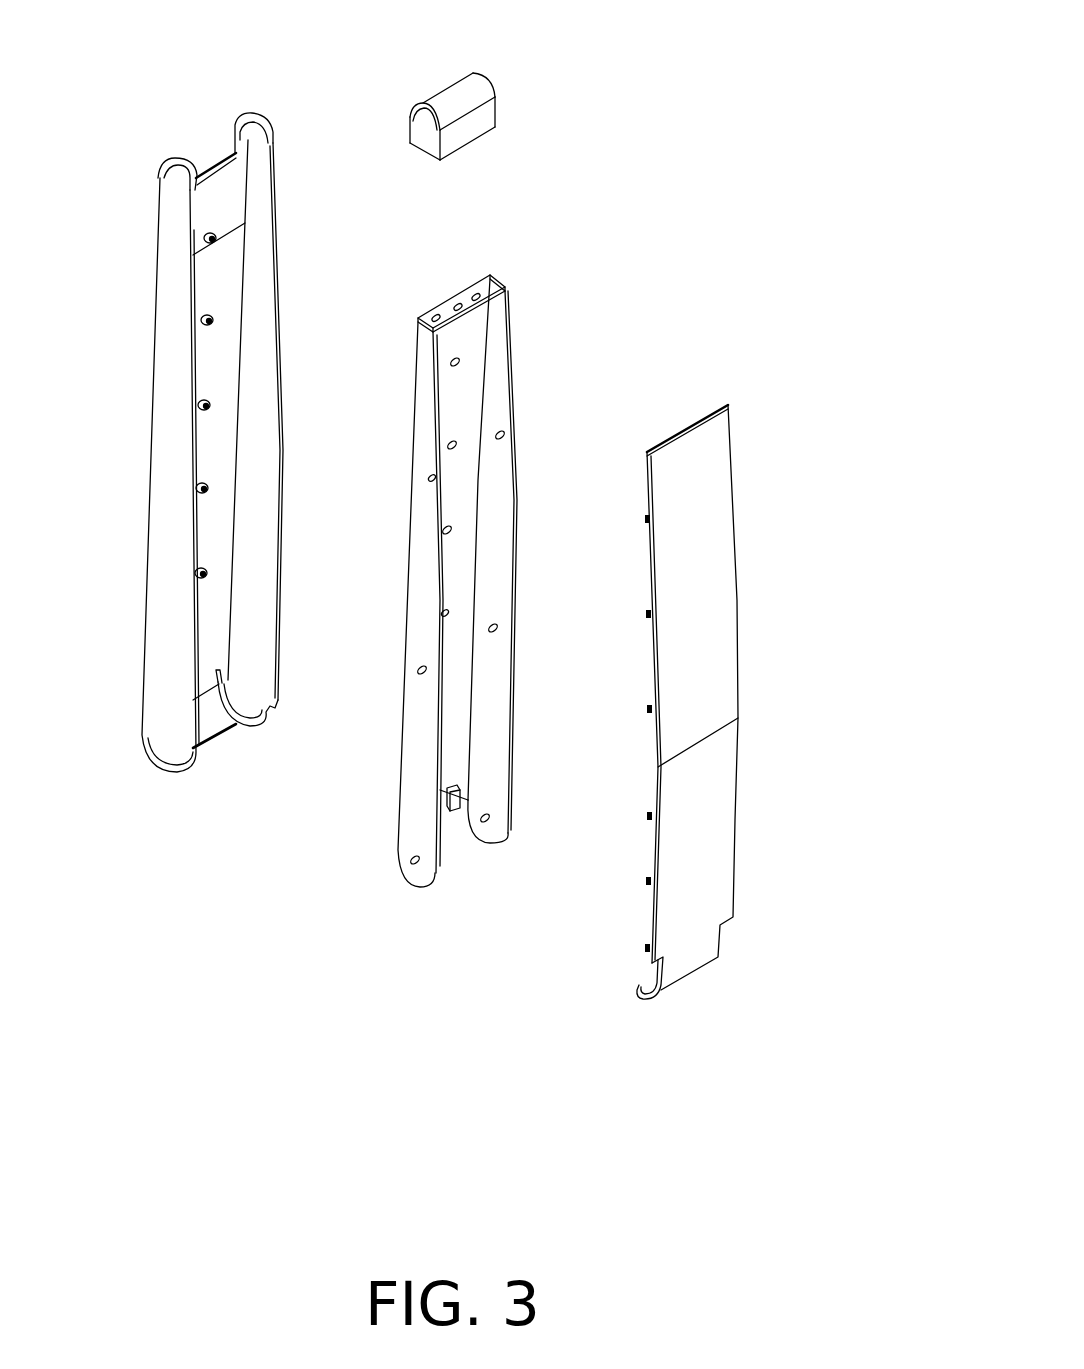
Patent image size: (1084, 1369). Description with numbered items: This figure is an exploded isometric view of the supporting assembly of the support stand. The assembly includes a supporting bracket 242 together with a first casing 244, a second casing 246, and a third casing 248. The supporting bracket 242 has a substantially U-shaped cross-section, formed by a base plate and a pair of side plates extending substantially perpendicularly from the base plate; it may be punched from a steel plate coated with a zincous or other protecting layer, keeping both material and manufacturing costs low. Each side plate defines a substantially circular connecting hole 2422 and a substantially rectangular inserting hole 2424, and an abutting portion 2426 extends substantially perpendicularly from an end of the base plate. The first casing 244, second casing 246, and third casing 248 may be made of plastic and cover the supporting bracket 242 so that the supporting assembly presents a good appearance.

The supporting bracket 242 is at (497, 352).
The first casing 244 is at (267, 230).
The second casing 246 is at (705, 485).
The third casing 248 is at (478, 88).
The connecting hole 2422 is at (490, 820).
The inserting hole 2424 is at (483, 808).
The abutting portion 2426 is at (452, 812).